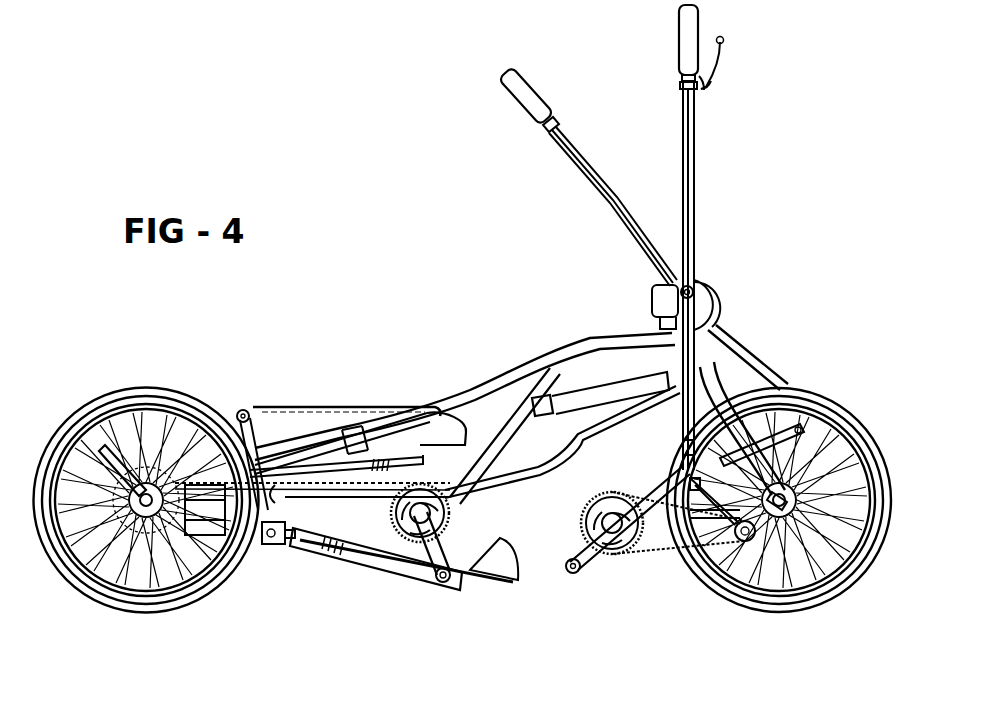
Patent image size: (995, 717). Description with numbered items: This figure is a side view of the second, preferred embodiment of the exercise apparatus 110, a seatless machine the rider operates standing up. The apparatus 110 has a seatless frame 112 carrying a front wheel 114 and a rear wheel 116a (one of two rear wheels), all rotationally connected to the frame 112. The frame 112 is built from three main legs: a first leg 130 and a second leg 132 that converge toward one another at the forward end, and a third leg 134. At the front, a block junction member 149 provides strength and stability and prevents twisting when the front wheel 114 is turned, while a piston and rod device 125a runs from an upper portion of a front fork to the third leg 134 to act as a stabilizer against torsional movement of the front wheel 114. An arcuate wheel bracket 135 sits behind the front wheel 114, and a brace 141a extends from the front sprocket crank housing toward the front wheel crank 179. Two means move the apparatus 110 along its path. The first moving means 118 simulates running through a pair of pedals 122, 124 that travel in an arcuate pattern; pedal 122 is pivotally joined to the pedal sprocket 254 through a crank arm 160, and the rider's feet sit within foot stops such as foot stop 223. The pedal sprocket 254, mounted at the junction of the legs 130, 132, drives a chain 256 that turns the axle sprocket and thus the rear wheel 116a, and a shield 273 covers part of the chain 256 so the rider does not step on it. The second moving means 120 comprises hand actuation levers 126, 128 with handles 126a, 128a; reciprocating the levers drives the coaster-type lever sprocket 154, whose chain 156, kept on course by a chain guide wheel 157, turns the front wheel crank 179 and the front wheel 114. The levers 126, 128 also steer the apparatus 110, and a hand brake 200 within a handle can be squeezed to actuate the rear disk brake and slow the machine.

The apparatus 110 is at (405, 302).
The seatless frame 112 is at (427, 443).
The front wheel 114 is at (777, 612).
The rear wheel 116a is at (150, 612).
The first moving means 118 is at (437, 588).
The second moving means 120 is at (714, 170).
The pedal 122 is at (352, 560).
The pedal 124 is at (400, 452).
The piston and rod device 125a is at (553, 417).
The first hand actuation lever 126 is at (618, 192).
The handle 126a is at (533, 82).
The second hand actuation lever 128 is at (700, 222).
The handle 128a is at (695, 20).
The first leg 130 is at (455, 395).
The second leg 132 is at (550, 492).
The third leg 134 is at (510, 467).
The wheel bracket 135 is at (614, 440).
The brace 141a is at (722, 570).
The block junction member 149 is at (640, 300).
The lever sprocket 154 is at (610, 543).
The chain 156 is at (648, 545).
The chain guide wheel 157 is at (700, 560).
The crank arm 160 is at (470, 543).
The front wheel crank 179 is at (820, 560).
The hand brake 200 is at (724, 60).
The foot stop 223 is at (495, 570).
The pedal sprocket 254 is at (410, 535).
The chain 256 is at (318, 532).
The shield 273 is at (318, 407).